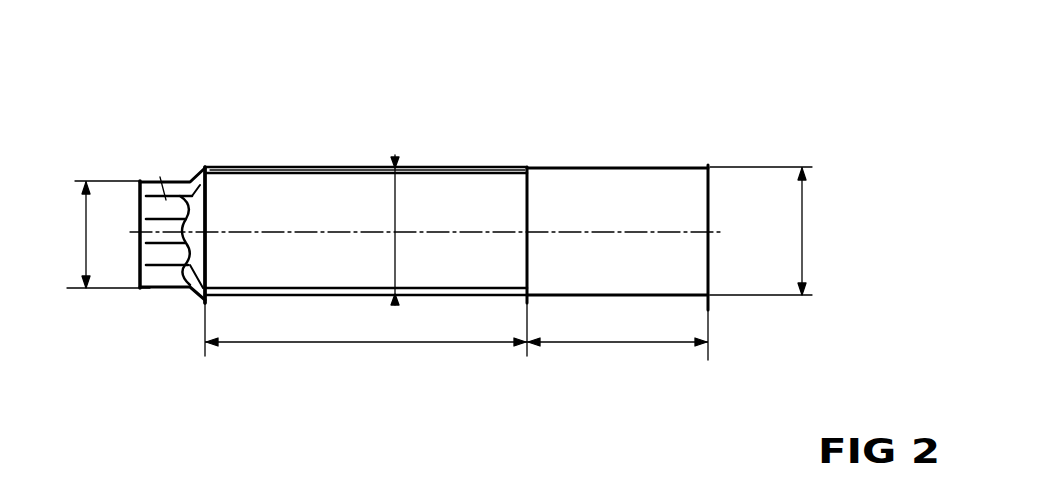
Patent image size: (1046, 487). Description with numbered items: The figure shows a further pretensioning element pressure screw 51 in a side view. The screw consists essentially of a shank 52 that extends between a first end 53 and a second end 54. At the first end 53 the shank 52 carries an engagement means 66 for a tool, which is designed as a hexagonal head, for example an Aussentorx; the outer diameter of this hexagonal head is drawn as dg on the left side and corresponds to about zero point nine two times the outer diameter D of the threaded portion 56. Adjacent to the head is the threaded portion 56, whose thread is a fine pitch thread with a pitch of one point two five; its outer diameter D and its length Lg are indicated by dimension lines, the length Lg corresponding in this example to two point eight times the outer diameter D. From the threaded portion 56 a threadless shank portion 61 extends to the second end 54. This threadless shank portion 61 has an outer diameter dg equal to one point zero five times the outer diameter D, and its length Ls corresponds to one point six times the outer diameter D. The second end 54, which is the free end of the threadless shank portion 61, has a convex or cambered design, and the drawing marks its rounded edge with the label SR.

The pretensioning element pressure screw 51 is at (160, 108).
The shank 52 is at (458, 200).
The first end 53 is at (131, 290).
The second end 54 is at (713, 192).
The threaded portion 56 is at (287, 167).
The threadless shank portion 61 is at (600, 200).
The engagement means 66 is at (160, 177).
The edge radius SR is at (704, 165).
The outer diameter of the threaded portion D is at (382, 230).
The length of the threaded portion Lg is at (366, 327).
The length of the threadless shank portion Ls is at (617, 329).
The outer diameter of the threadless shank portion dg is at (428, 231).